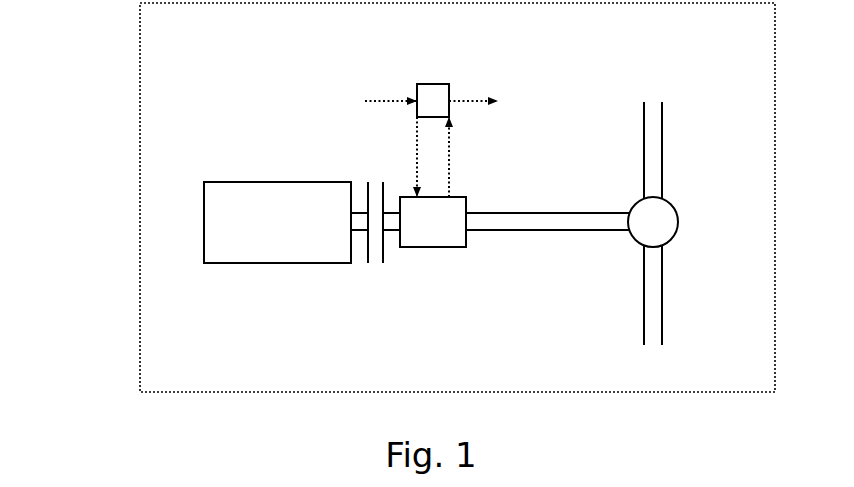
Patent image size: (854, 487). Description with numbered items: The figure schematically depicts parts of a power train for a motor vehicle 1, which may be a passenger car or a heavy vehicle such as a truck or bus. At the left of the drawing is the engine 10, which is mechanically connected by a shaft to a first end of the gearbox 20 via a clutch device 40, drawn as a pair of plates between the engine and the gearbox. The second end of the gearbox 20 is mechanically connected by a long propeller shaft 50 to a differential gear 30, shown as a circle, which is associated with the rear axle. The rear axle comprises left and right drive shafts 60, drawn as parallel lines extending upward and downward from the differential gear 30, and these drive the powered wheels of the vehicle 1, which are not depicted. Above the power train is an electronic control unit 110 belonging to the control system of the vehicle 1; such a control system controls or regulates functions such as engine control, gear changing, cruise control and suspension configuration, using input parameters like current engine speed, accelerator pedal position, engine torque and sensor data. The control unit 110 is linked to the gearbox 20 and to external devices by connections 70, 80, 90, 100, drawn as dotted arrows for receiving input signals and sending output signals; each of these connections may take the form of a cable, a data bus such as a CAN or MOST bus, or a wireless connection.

The motor vehicle 1 is at (157, 68).
The engine 10 is at (253, 230).
The gearbox 20 is at (433, 232).
The differential gear 30 is at (660, 215).
The clutch device 40 is at (369, 258).
The propeller shaft 50 is at (532, 230).
The drive shafts 60 is at (662, 150).
The connection 70 is at (413, 153).
The connection 80 is at (450, 153).
The connection 90 is at (383, 97).
The connection 100 is at (467, 97).
The electronic control unit 110 is at (433, 84).